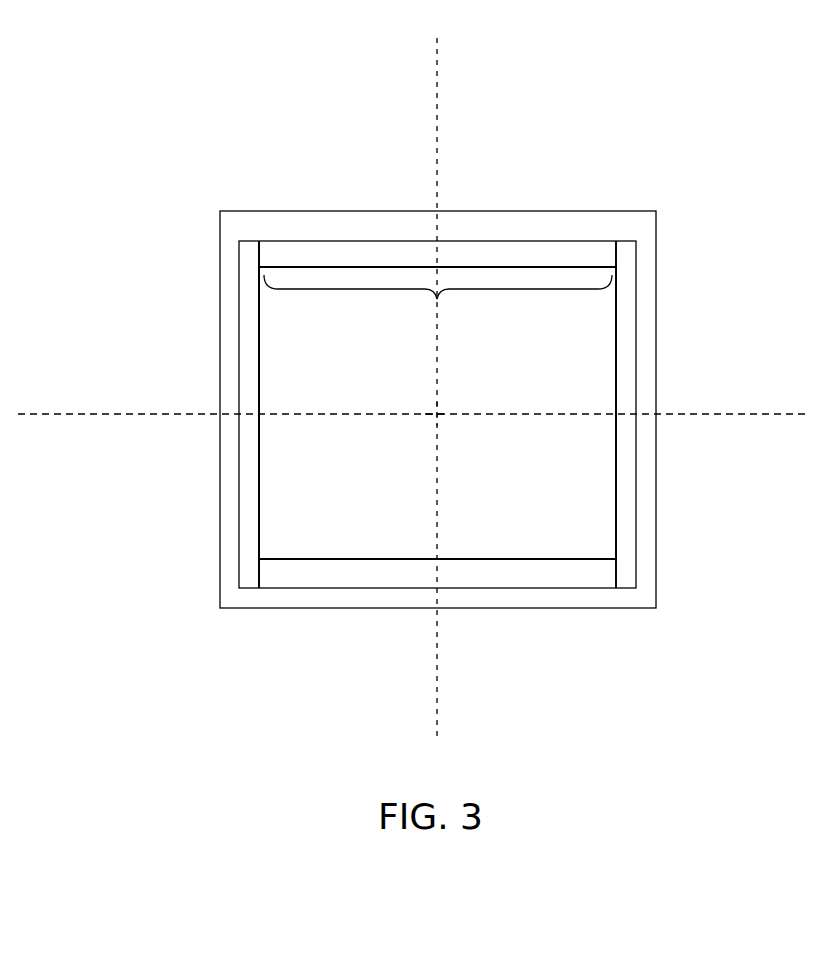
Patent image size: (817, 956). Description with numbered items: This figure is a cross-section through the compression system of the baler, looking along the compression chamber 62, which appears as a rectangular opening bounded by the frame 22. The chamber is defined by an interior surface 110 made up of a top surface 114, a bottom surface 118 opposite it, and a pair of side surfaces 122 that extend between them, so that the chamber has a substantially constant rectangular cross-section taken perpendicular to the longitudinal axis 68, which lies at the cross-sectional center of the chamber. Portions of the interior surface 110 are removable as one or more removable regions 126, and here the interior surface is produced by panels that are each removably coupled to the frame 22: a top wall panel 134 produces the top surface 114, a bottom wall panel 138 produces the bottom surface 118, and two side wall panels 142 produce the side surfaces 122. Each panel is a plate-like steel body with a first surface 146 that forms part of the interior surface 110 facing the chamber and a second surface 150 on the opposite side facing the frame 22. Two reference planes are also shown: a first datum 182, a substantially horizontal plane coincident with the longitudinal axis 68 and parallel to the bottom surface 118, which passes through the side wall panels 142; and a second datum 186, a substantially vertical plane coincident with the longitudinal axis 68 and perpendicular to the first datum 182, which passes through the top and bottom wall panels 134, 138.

The frame 22 is at (271, 218).
The compression chamber 62 is at (492, 536).
The longitudinal axis 68 is at (443, 412).
The interior surface 110 is at (272, 498).
The top surface 114 is at (509, 278).
The bottom surface 118 is at (404, 547).
The side surfaces 122 is at (272, 454).
The removable region 126 is at (438, 309).
The top wall panel 134 is at (342, 267).
The bottom wall panel 138 is at (285, 580).
The side wall panels 142 is at (249, 440).
The first surface 146 is at (270, 325).
The second surface 150 is at (388, 232).
The first datum 182 is at (797, 412).
The second datum 186 is at (441, 68).